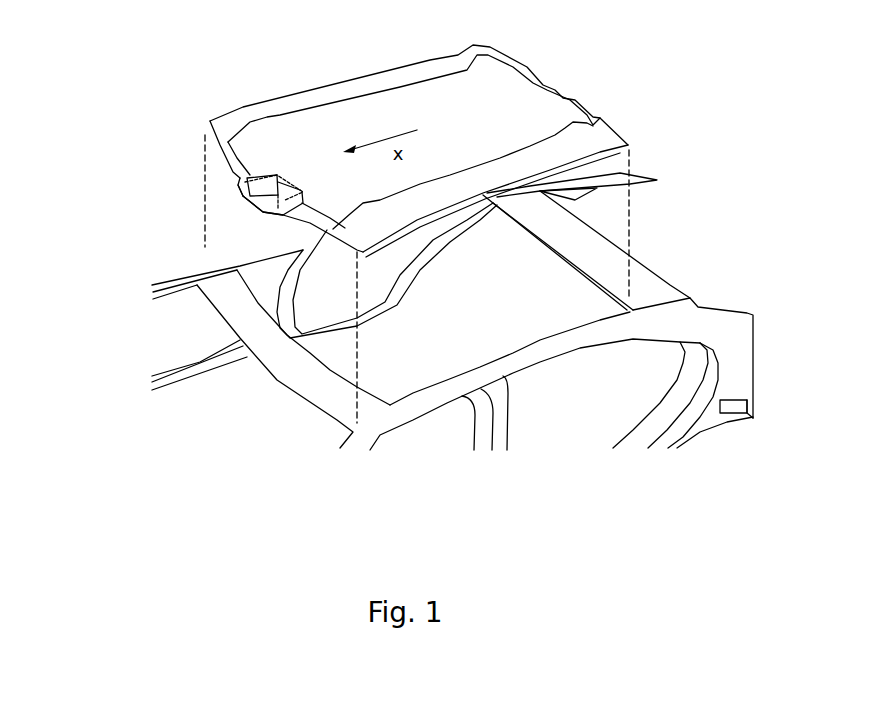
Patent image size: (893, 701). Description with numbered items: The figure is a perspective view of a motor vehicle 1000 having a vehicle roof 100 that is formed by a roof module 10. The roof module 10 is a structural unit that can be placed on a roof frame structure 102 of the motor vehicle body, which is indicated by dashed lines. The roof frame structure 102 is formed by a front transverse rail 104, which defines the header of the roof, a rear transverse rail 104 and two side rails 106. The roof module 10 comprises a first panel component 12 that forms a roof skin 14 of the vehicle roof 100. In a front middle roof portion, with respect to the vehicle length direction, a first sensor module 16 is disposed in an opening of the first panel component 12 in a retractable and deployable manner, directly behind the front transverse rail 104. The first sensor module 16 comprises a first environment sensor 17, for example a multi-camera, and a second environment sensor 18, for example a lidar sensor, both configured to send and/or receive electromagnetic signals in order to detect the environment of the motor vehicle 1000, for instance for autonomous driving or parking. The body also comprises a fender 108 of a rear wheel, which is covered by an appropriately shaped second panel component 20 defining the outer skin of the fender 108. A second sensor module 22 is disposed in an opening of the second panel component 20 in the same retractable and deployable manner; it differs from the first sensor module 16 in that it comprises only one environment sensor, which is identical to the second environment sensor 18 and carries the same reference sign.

The roof module 10 is at (438, 96).
The first panel component 12 is at (533, 100).
The roof skin 14 is at (482, 110).
The first sensor module 16 is at (273, 173).
The first environment sensor 17 is at (241, 178).
The second environment sensor 18 is at (254, 175).
The second panel component 20 is at (725, 392).
The second sensor module 22 is at (732, 413).
The vehicle roof 100 is at (170, 265).
The roof frame structure 102 is at (597, 243).
The transverse rail 104 is at (273, 380).
The side rail 106 is at (258, 248).
The fender 108 is at (690, 420).
The motor vehicle 1000 is at (150, 330).